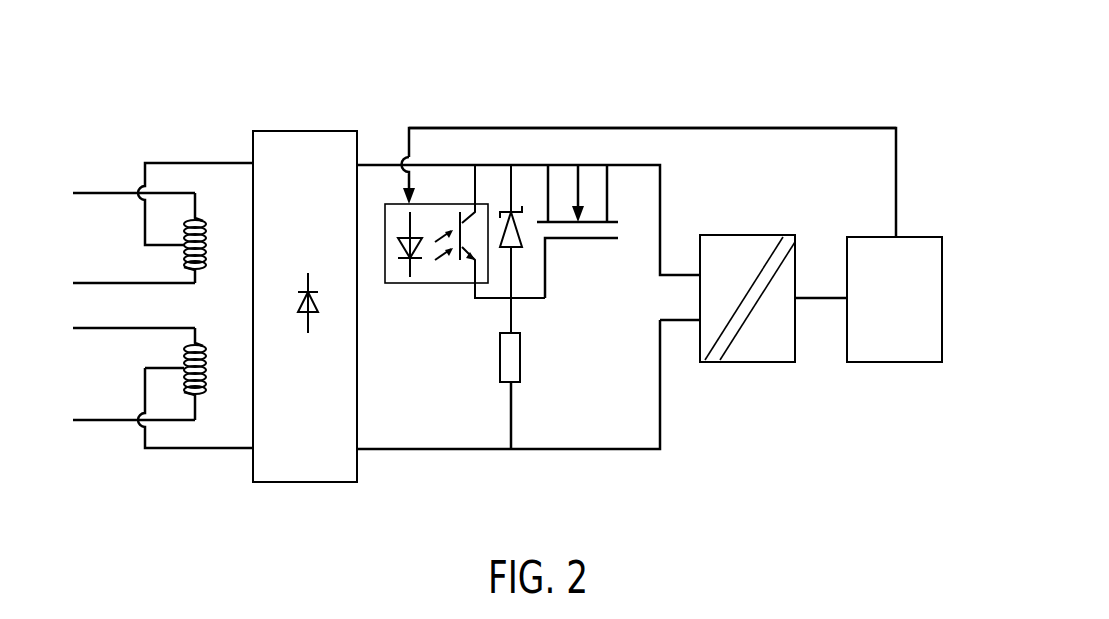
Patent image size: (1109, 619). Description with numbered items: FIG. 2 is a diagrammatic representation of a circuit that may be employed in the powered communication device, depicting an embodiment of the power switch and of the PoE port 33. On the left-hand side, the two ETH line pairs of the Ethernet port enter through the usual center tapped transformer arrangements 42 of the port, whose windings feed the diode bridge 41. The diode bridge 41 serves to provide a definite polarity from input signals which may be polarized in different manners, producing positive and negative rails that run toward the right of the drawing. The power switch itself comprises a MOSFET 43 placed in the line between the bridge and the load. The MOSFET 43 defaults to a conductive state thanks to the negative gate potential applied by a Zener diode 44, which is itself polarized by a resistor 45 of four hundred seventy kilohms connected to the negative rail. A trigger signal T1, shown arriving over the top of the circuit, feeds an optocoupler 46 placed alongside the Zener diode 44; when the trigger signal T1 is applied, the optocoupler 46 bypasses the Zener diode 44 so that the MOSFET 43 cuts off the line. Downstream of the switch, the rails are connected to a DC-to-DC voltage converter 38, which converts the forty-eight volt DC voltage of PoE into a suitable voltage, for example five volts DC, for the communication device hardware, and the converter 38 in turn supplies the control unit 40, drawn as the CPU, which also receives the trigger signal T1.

The PoE port 33 is at (122, 431).
The center tapped transformer arrangements 42 is at (177, 190).
The diode bridge 41 is at (303, 483).
The optocoupler 46 is at (410, 285).
The Zener diode 44 is at (510, 161).
The resistor 45 is at (498, 374).
The MOSFET 43 is at (585, 161).
The voltage converter 38 is at (747, 363).
The control unit 40 is at (893, 363).
The trigger signal T1 is at (782, 128).